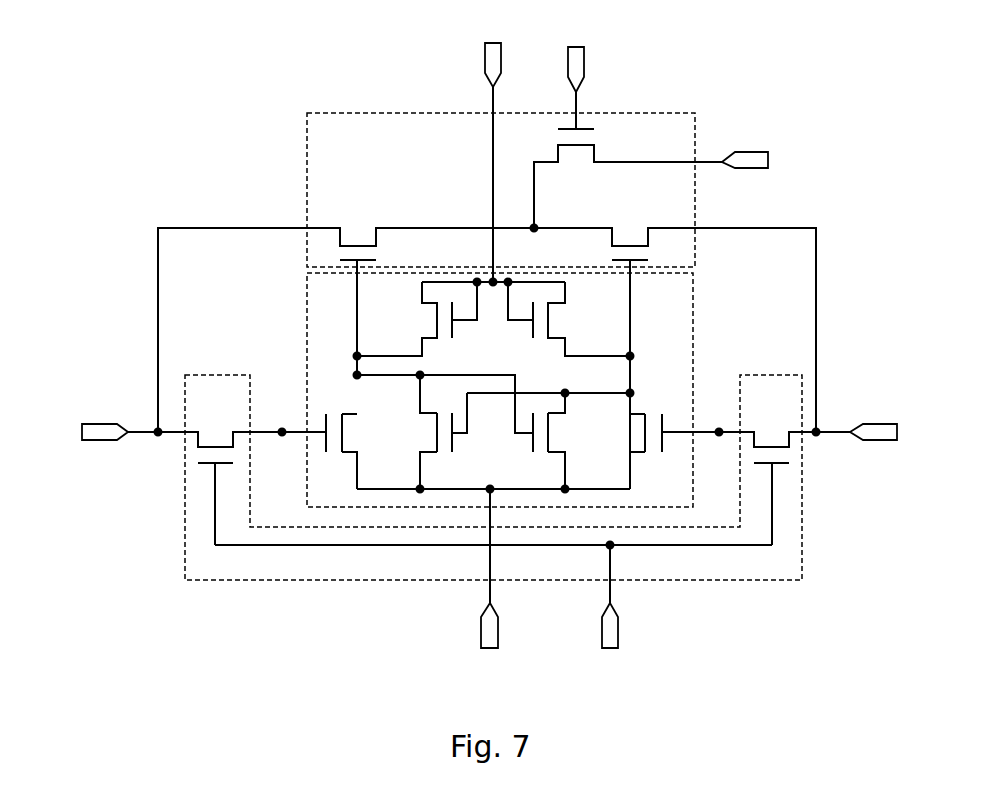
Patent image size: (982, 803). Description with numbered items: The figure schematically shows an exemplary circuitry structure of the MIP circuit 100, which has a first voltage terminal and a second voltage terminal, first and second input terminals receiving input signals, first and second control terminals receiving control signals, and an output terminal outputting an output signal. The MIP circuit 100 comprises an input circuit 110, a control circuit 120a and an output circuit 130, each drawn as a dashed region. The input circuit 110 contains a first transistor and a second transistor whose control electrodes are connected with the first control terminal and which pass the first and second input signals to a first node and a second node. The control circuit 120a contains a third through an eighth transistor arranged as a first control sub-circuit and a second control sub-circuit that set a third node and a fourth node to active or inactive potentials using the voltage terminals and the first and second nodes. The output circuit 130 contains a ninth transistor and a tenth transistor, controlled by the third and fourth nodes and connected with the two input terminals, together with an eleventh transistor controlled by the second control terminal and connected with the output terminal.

The MIP circuit 100 is at (140, 112).
The input circuit 110 is at (185, 540).
The control circuit 120a is at (307, 345).
The output circuit 130 is at (307, 180).